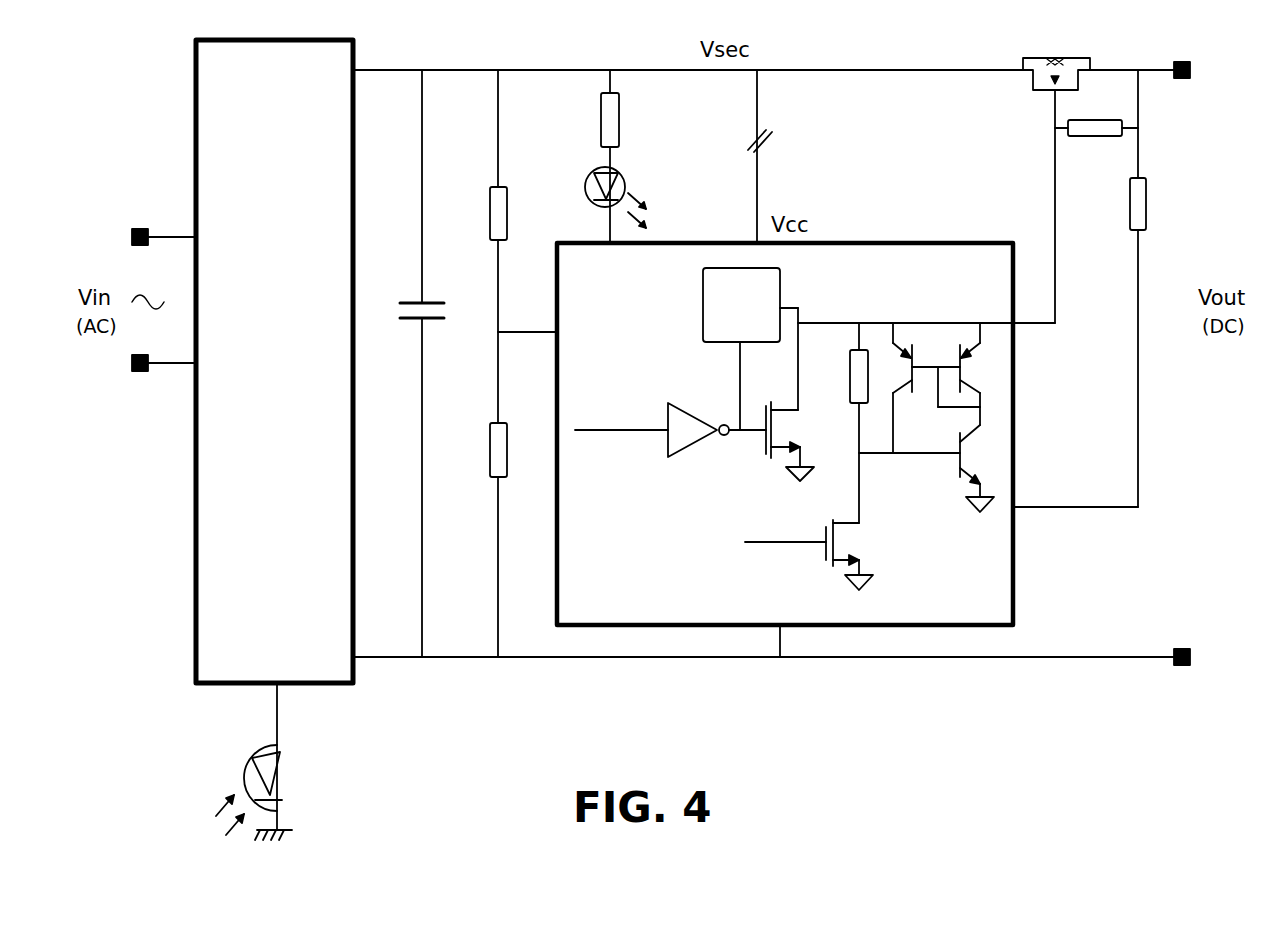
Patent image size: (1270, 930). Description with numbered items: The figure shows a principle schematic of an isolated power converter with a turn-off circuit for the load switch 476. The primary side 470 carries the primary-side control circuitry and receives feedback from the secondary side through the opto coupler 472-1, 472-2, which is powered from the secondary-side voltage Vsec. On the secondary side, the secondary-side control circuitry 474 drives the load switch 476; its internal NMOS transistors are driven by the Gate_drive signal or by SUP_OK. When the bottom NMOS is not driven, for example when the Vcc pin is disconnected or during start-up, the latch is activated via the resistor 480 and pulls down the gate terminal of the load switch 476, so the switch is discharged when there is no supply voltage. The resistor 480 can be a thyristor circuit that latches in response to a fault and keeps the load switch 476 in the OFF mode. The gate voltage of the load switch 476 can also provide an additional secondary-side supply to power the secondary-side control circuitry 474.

The primary side 470 is at (340, 40).
The opto coupler 472-1 is at (278, 752).
The opto coupler 472-2 is at (618, 183).
The secondary-side control circuitry 474 is at (905, 243).
The load switch 476 is at (1050, 56).
The resistor 480 is at (928, 380).